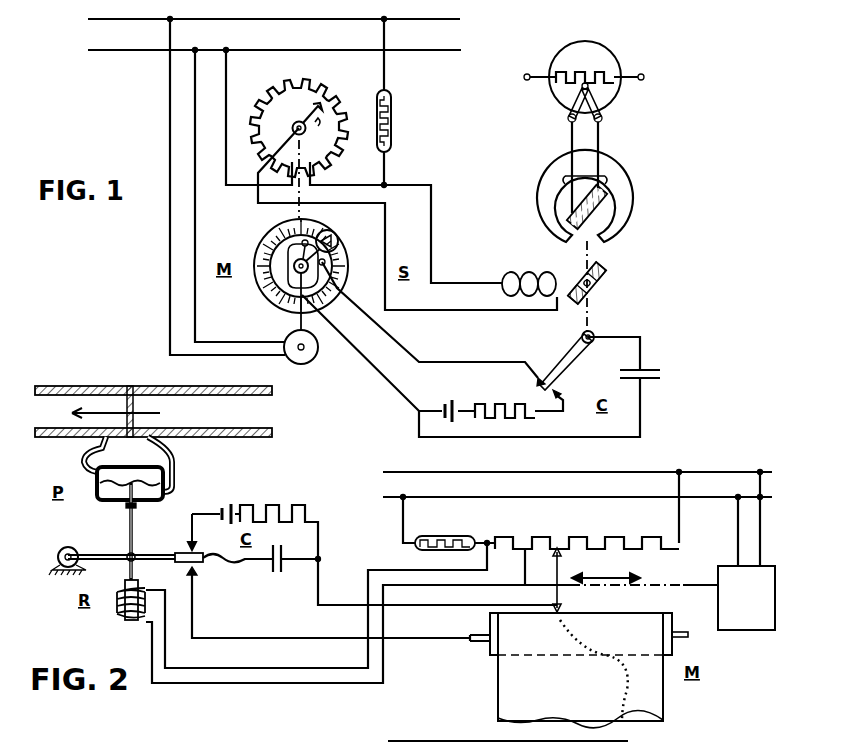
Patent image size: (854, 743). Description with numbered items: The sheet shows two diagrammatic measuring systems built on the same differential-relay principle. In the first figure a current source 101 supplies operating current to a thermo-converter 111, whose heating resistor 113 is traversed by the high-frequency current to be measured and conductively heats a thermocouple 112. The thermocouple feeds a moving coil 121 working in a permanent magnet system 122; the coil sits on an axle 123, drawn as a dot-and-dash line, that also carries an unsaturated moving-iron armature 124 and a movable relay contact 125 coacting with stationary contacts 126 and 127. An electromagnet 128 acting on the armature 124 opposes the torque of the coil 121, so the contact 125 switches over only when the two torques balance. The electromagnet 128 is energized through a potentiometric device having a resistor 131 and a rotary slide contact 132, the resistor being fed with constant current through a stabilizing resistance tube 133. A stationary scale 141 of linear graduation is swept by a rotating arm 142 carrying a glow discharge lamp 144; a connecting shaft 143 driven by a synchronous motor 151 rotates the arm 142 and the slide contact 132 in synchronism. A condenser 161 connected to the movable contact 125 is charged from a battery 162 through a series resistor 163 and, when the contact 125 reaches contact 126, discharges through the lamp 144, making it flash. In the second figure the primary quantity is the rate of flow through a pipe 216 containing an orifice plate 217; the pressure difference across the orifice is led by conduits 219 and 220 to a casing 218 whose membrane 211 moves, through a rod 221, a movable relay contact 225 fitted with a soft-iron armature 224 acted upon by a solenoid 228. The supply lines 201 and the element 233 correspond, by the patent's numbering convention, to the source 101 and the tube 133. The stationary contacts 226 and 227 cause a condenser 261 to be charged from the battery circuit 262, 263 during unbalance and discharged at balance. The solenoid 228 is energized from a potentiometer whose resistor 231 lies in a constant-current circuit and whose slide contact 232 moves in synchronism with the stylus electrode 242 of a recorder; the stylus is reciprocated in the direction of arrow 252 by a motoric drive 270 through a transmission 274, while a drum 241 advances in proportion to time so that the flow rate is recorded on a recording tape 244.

In FIG. 1, the current source 101 is at (468, 18).
In FIG. 1, the thermo-converter 111 is at (553, 92).
In FIG. 1, the thermocouple 112 is at (603, 99).
In FIG. 1, the heating resistor 113 is at (592, 72).
In FIG. 1, the moving coil 121 is at (600, 212).
In FIG. 1, the permanent magnet system 122 is at (628, 186).
In FIG. 1, the axle 123 is at (595, 257).
In FIG. 1, the magnet armature 124 is at (606, 276).
In FIG. 1, the relay contact 125 is at (568, 360).
In FIG. 1, the stationary contact 126 is at (534, 380).
In FIG. 1, the stationary contact 127 is at (562, 390).
In FIG. 1, the electromagnet 128 is at (524, 270).
In FIG. 1, the resistor 131 is at (282, 80).
In FIG. 1, the rotary slide contact 132 is at (310, 112).
In FIG. 1, the stabilizing resistance tube 133 is at (392, 115).
In FIG. 1, the stationary scale 141 is at (280, 228).
In FIG. 1, the rotating arm 142 is at (328, 270).
In FIG. 1, the connecting shaft 143 is at (300, 322).
In FIG. 1, the glow discharge lamp 144 is at (338, 240).
In FIG. 1, the synchronous motor 151 is at (310, 362).
In FIG. 1, the condenser 161 is at (662, 374).
In FIG. 1, the battery 162 is at (447, 400).
In FIG. 1, the series resistor 163 is at (520, 418).
In FIG. 2, the power supply lines 201 is at (702, 472).
In FIG. 2, the membrane 211 is at (118, 490).
In FIG. 2, the pipe 216 is at (150, 386).
In FIG. 2, the orifice plate 217 is at (127, 398).
In FIG. 2, the casing 218 is at (125, 466).
In FIG. 2, the conduit 219 is at (82, 462).
In FIG. 2, the conduit 220 is at (178, 472).
In FIG. 2, the rod 221 is at (134, 530).
In FIG. 2, the armature 224 is at (131, 620).
In FIG. 2, the movable relay contact 225 is at (105, 553).
In FIG. 2, the stationary contact 226 is at (199, 538).
In FIG. 2, the stationary contact 227 is at (208, 574).
In FIG. 2, the solenoid 228 is at (117, 605).
In FIG. 2, the resistor 231 is at (570, 537).
In FIG. 2, the slide contact 232 is at (562, 556).
In FIG. 2, the resistor 233 is at (440, 536).
In FIG. 2, the drum 241 is at (672, 618).
In FIG. 2, the stylus electrode 242 is at (567, 610).
In FIG. 2, the recording tape 244 is at (663, 712).
In FIG. 2, the arrow 252 is at (618, 570).
In FIG. 2, the condenser 261 is at (275, 575).
In FIG. 2, the battery circuit 262 is at (232, 508).
In FIG. 2, the battery circuit 263 is at (297, 505).
In FIG. 2, the motoric drive 270 is at (746, 620).
In FIG. 2, the transmission 274 is at (632, 590).